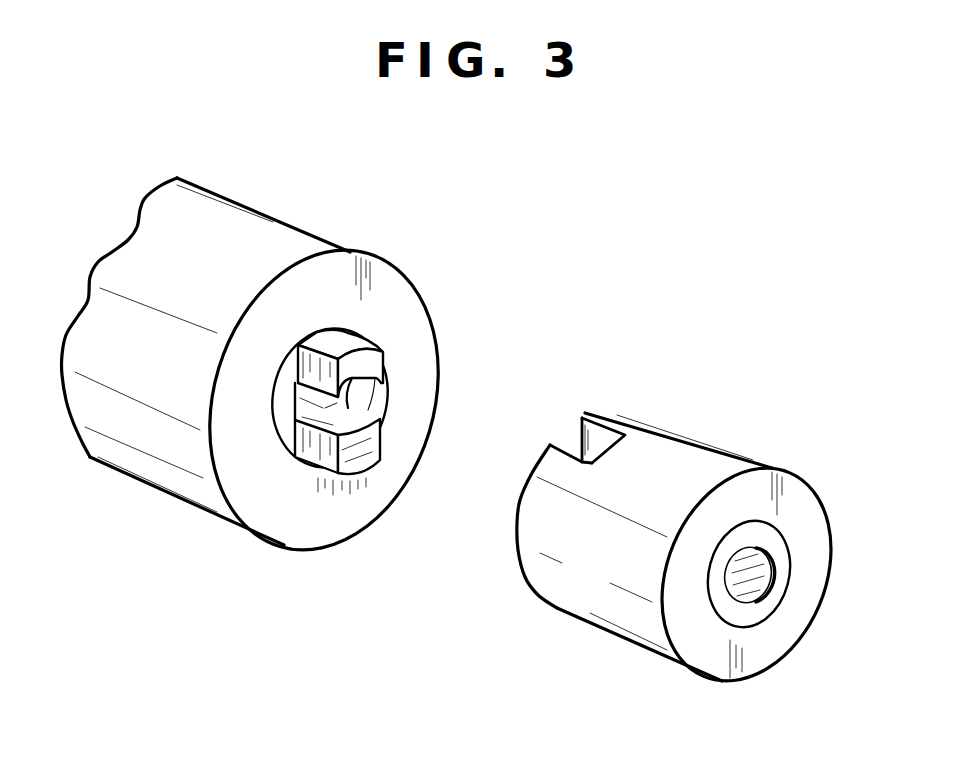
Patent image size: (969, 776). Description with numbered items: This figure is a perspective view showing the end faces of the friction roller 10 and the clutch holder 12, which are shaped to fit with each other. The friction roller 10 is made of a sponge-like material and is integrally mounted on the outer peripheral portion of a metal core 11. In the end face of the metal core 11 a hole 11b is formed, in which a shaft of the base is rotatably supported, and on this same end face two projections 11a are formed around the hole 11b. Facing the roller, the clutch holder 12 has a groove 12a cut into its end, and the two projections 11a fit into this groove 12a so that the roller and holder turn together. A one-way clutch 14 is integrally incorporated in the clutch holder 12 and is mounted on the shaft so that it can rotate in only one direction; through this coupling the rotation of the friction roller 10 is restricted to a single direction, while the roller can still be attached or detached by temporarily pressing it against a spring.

The friction roller 10 is at (377, 280).
The metal core 11 is at (384, 426).
The projections 11a is at (373, 359).
The hole 11b is at (360, 407).
The clutch holder 12 is at (697, 526).
The groove 12a is at (570, 445).
The one-way clutch 14 is at (775, 544).